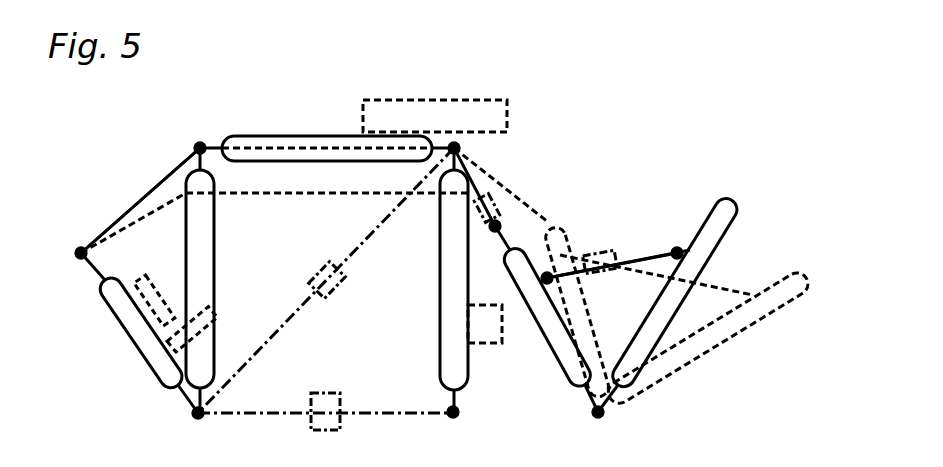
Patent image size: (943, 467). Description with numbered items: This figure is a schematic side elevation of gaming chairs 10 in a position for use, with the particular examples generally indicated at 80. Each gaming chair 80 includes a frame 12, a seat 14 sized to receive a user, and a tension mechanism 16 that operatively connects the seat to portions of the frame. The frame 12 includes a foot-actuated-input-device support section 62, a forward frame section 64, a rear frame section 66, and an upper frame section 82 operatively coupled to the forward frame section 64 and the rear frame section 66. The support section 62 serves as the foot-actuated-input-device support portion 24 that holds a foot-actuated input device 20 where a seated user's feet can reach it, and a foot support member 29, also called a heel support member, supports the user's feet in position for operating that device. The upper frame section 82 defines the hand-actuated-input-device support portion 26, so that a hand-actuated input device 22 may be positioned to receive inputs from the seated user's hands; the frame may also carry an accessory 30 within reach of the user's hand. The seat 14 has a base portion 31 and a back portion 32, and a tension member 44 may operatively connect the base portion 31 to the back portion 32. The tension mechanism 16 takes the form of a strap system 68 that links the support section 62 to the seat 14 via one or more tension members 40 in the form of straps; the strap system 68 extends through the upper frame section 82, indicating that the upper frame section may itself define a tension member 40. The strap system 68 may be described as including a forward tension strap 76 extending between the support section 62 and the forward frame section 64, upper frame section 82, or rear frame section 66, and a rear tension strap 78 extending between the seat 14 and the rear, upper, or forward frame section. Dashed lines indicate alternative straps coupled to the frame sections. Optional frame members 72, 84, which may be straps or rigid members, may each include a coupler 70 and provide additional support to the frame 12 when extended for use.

The gaming chair 10 is at (782, 52).
The gaming chair 80 is at (755, 88).
The frame 12 is at (537, 118).
The seat 14 is at (805, 272).
The tension mechanism 16 is at (196, 145).
The foot-actuated input device 20 is at (143, 293).
The hand-actuated input device 22 is at (460, 99).
The foot-actuated-input-device support portion 24 is at (102, 283).
The hand-actuated-input-device support portion 26 is at (392, 135).
The foot support member 29 is at (218, 328).
The accessory 30 is at (487, 346).
The base portion 31 is at (570, 372).
The back portion 32 is at (712, 215).
The tension member 40 is at (116, 228).
The tension member 44 is at (662, 250).
The foot-actuated-input-device support section 62 is at (112, 320).
The forward frame section 64 is at (215, 238).
The rear frame section 66 is at (440, 288).
The strap system 68 is at (155, 210).
The coupler 70 is at (312, 278).
The optional frame member 72 is at (240, 412).
The forward tension strap 76 is at (135, 212).
The rear tension strap 78 is at (477, 200).
The upper frame section 82 is at (266, 135).
The optional frame member 84 is at (378, 235).